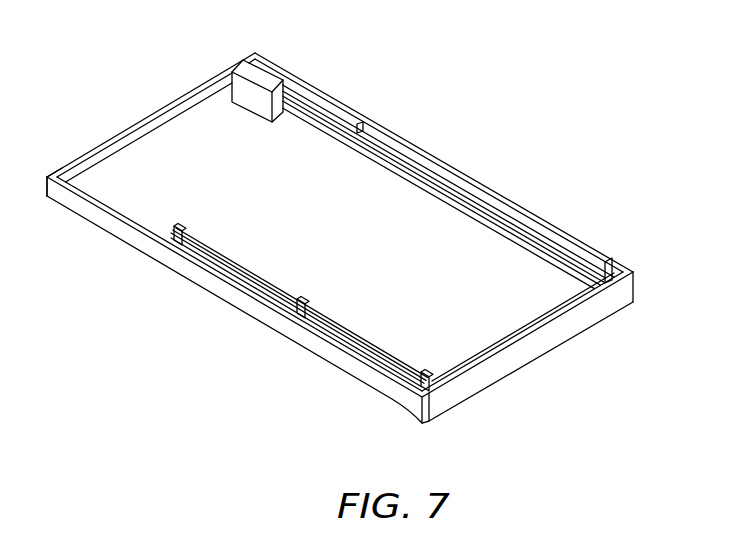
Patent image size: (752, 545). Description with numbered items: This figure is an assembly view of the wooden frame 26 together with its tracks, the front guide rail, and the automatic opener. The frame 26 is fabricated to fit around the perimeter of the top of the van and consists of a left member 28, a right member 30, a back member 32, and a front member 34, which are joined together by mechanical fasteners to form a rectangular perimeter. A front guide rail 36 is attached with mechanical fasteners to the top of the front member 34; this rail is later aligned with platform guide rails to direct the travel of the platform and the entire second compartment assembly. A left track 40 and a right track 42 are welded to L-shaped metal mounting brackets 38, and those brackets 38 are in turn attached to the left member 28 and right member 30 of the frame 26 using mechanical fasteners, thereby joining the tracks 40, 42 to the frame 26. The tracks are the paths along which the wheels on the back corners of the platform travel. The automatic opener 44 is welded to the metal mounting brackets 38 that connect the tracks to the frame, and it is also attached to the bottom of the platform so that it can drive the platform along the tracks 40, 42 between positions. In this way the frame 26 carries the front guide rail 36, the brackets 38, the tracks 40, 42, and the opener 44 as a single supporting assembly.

The wooden frame 26 is at (157, 112).
The left member 28 is at (90, 221).
The right member 30 is at (525, 208).
The back member 32 is at (80, 155).
The front member 34 is at (562, 343).
The front guide rail 36 is at (598, 297).
The L-shaped metal mounting brackets 38 is at (185, 232).
The left track 40 is at (262, 277).
The right track 42 is at (360, 128).
The automatic opener 44 is at (264, 72).